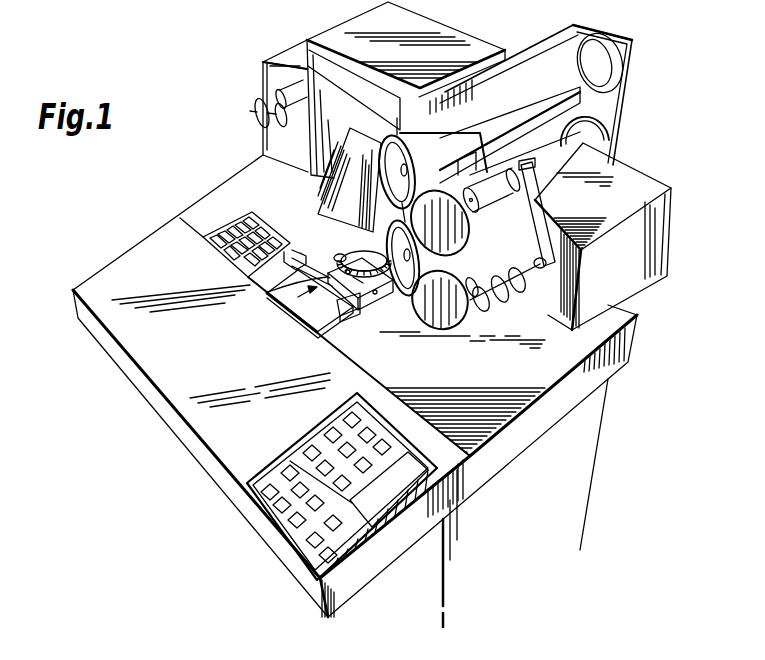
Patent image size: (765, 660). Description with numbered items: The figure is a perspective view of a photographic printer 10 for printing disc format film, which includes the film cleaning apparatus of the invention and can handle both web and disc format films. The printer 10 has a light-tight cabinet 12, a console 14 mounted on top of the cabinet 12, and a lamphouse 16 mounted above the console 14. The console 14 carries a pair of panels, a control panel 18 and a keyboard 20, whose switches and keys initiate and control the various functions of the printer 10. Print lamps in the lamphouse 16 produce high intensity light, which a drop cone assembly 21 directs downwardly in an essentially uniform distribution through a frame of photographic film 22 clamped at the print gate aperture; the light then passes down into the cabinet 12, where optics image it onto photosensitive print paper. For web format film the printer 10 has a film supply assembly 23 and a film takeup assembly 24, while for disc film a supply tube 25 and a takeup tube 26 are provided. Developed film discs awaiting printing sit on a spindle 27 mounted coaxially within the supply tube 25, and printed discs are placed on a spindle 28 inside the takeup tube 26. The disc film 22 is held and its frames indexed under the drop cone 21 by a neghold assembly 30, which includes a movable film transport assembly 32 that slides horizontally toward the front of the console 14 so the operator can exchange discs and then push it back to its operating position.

The photographic printer 10 is at (128, 234).
The light-tight cabinet 12 is at (590, 460).
The console 14 is at (190, 433).
The lamphouse 16 is at (345, 121).
The control panel 18 is at (298, 517).
The keyboard 20 is at (223, 250).
The drop cone assembly 21 is at (352, 191).
The photographic film 22 is at (298, 310).
The film supply assembly 23 is at (246, 108).
The film takeup assembly 24 is at (632, 227).
The supply tube 25 is at (537, 73).
The takeup tube 26 is at (565, 142).
The spindle 27 is at (447, 136).
The spindle 28 is at (407, 262).
The neghold assembly 30 is at (284, 308).
The film transport assembly 32 is at (391, 299).